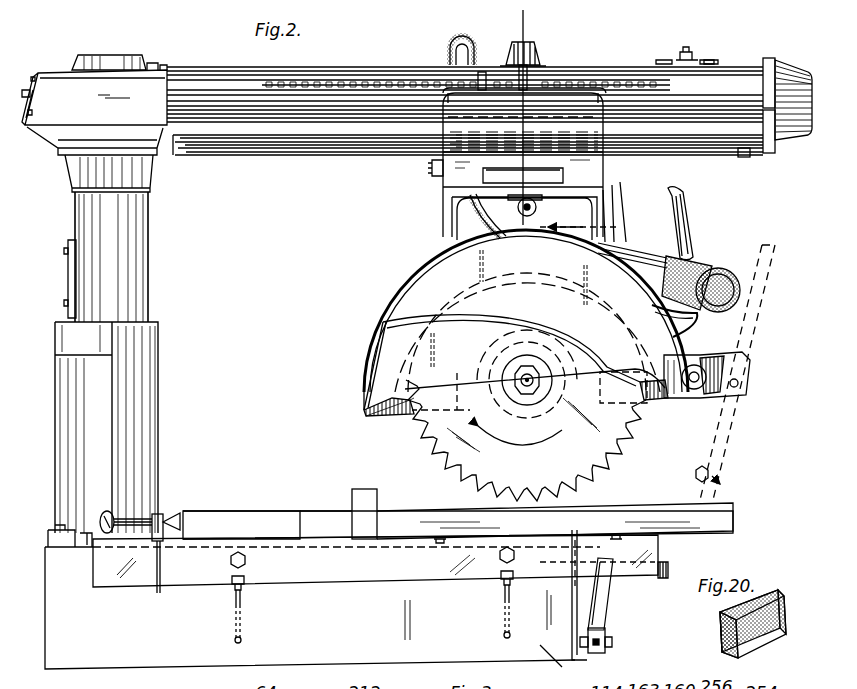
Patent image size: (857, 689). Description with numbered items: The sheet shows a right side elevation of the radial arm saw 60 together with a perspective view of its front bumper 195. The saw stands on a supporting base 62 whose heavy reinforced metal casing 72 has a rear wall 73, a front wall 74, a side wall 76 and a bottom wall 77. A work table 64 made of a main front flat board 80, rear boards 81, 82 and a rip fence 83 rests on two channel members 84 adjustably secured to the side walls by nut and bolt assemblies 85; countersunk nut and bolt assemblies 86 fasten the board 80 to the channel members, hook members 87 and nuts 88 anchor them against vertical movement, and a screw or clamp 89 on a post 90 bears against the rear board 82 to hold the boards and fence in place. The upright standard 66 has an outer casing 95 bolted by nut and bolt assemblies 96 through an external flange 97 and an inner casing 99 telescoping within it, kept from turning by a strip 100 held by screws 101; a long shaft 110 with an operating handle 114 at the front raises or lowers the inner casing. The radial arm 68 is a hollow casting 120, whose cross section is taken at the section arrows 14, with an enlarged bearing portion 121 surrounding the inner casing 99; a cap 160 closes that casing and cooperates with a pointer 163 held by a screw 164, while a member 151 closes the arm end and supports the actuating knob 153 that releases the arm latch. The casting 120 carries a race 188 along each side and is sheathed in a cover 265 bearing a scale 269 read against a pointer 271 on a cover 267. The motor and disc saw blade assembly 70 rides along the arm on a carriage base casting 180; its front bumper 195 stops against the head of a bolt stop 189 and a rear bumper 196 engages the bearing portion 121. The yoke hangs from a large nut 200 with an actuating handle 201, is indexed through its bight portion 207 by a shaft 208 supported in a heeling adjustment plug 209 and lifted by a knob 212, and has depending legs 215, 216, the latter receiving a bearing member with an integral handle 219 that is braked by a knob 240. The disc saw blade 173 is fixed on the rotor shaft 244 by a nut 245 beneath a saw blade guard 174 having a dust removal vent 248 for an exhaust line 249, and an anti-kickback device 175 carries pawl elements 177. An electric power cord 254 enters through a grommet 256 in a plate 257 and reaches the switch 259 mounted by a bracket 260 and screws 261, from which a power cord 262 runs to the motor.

In FIG. 2, the section line 14- 14 is at (512, 10).
In FIG. 2, the radial arm saw 60 is at (700, 34).
In FIG. 2, the supporting base 62 is at (155, 670).
In FIG. 2, the work table 64 is at (328, 507).
In FIG. 2, the upright standard 66 is at (160, 366).
In FIG. 2, the radial arm 68 is at (336, 156).
In FIG. 2, the motor and disc saw blade assembly 70 is at (425, 265).
In FIG. 2, the heavy reinforced metal casing 72 is at (584, 662).
In FIG. 2, the rear wall 73 is at (40, 622).
In FIG. 2, the front wall 74 is at (606, 600).
In FIG. 2, the side wall 76 is at (564, 665).
In FIG. 2, the bottom wall 77 is at (360, 668).
In FIG. 2, the main front flat board 80 is at (735, 515).
In FIG. 2, the rear board 81 is at (312, 512).
In FIG. 2, the rear board 82 is at (222, 512).
In FIG. 2, the rip fence 83 is at (366, 490).
In FIG. 2, the channel member 84 is at (643, 547).
In FIG. 2, the nut and bolt assemblies 85 is at (248, 562).
In FIG. 2, the countersunk nut and bolt assemblies 86 is at (440, 543).
In FIG. 2, the hook members 87 is at (238, 640).
In FIG. 2, the nuts 88 is at (238, 584).
In FIG. 2, the screw or clamp 89 is at (100, 514).
In FIG. 2, the post 90 is at (163, 512).
In FIG. 2, the outer cylindrical casing 95 is at (135, 420).
In FIG. 2, the nut and bolt assemblies 96 is at (58, 525).
In FIG. 2, the external flange 97 is at (85, 546).
In FIG. 2, the inner cylindrical casing 99 is at (118, 243).
In FIG. 2, the axially extending strip 100 is at (68, 242).
In FIG. 2, the screws 101 is at (66, 302).
In FIG. 2, the long shaft 110 is at (612, 642).
In FIG. 2, the operating handle 114 is at (657, 583).
In FIG. 2, the rigid hollow elongated casting 120 is at (58, 152).
In FIG. 2, the bearing portion 121 is at (152, 180).
In FIG. 2, the member 151 is at (771, 58).
In FIG. 2, the actuating knob 153 is at (793, 136).
In FIG. 2, the cap 160 is at (93, 58).
In FIG. 2, the pointer 163 is at (152, 62).
In FIG. 2, the screw 164 is at (165, 64).
In FIG. 2, the disc saw blade 173 is at (620, 433).
In FIG. 2, the saw blade guard 174 is at (388, 358).
In FIG. 2, the anti-kickback device 175 is at (728, 432).
In FIG. 2, the pawl elements 177 is at (722, 480).
In FIG. 2, the base casting 180 is at (452, 181).
In FIG. 2, the race 188 is at (284, 148).
In FIG. 2, the bolt stop 189 is at (746, 158).
In FIG. 20, the front bumper 195 is at (762, 625).
In FIG. 2, the rear bumper 196 is at (432, 170).
In FIG. 2, the large nut 200 is at (527, 321).
In FIG. 2, the actuating handle 201 is at (524, 218).
In FIG. 2, the bight portion 207 is at (470, 203).
In FIG. 2, the vertically movable shaft 208 is at (546, 78).
In FIG. 2, the heeling adjustment plug 209 is at (565, 183).
In FIG. 2, the knob 212 is at (552, 72).
In FIG. 2, the depending leg 215 is at (450, 244).
In FIG. 2, the depending leg 216 is at (616, 228).
In FIG. 2, the handle 219 is at (692, 216).
In FIG. 2, the knob 240 is at (707, 400).
In FIG. 2, the rotor shaft 244 is at (527, 396).
In FIG. 2, the nut 245 is at (513, 390).
In FIG. 2, the dust removal vent 248 is at (666, 262).
In FIG. 2, the exhaust line 249 is at (716, 268).
In FIG. 2, the electric power cord 254 is at (25, 90).
In FIG. 2, the grommet 256 is at (94, 97).
In FIG. 2, the plate 257 is at (35, 105).
In FIG. 2, the "on" and "off" switch 259 is at (684, 47).
In FIG. 2, the bracket 260 is at (708, 58).
In FIG. 2, the screws 261 is at (660, 60).
In FIG. 2, the power cord 262 is at (464, 40).
In FIG. 2, the cover 265 is at (240, 114).
In FIG. 2, the cover 267 is at (583, 98).
In FIG. 2, the scale 269 is at (398, 80).
In FIG. 2, the pointer 271 is at (486, 72).